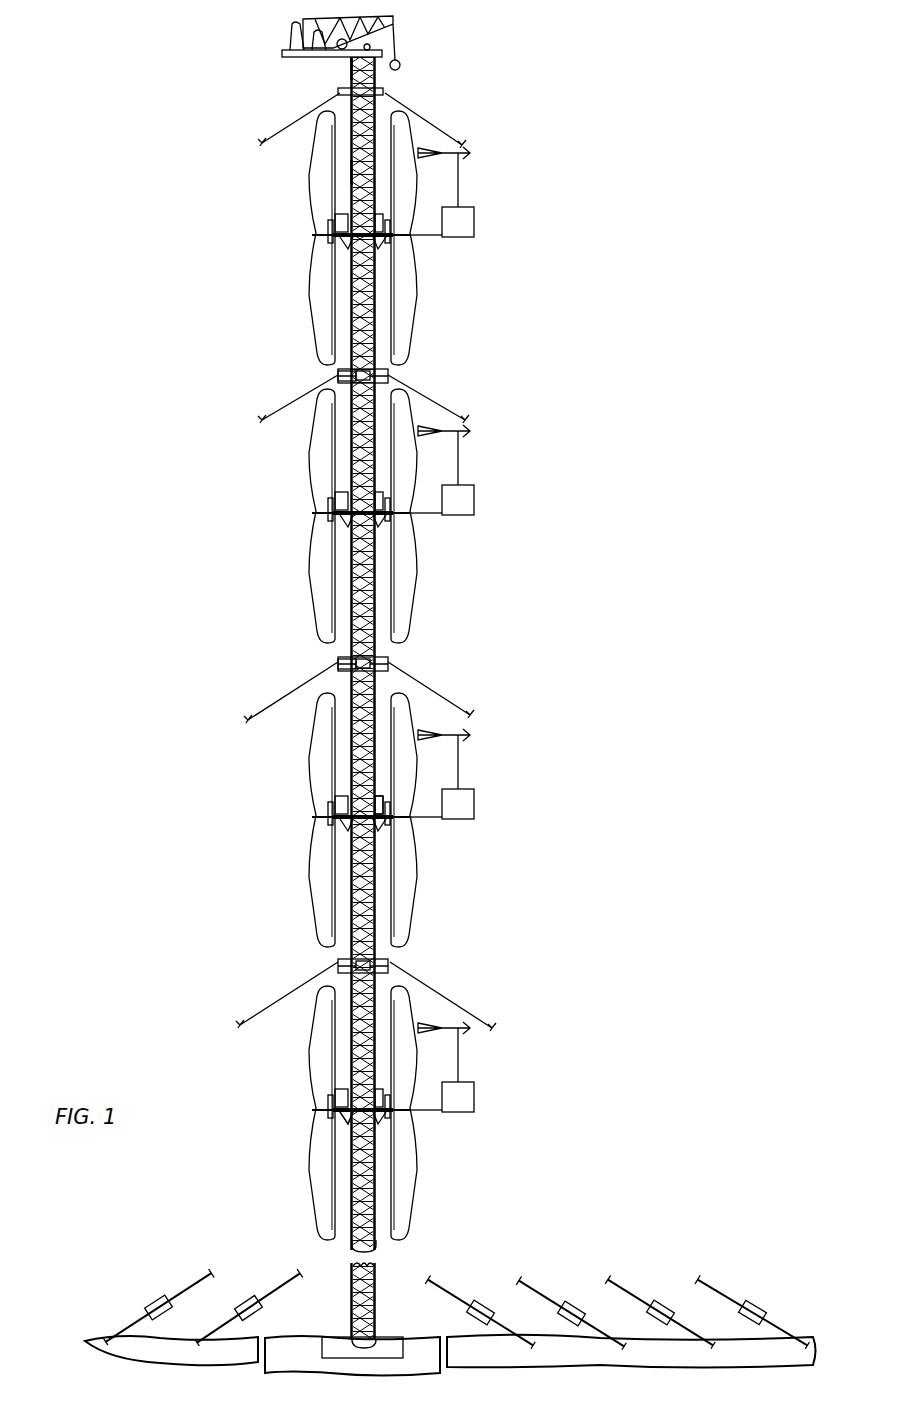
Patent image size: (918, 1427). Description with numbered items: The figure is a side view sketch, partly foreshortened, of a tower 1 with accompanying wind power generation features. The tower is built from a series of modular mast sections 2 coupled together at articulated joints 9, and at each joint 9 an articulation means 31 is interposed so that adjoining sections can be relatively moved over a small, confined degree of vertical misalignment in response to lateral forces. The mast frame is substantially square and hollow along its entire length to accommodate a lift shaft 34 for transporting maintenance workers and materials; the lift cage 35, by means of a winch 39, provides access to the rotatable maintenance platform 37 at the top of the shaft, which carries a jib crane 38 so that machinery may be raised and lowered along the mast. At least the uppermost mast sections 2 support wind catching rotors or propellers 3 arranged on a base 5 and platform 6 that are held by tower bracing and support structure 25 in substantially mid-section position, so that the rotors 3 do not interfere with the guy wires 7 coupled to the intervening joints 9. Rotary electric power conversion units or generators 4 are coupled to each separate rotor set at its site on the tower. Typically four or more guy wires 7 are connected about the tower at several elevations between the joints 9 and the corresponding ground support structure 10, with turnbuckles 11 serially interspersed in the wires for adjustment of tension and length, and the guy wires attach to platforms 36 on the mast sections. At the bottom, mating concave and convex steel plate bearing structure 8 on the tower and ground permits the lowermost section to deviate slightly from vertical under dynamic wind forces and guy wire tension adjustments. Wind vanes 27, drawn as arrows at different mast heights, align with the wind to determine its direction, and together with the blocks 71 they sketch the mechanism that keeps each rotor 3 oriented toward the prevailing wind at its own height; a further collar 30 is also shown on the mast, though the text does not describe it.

The tower 1 is at (556, 384).
The modular mast section 2 is at (376, 323).
The rotor 3 is at (312, 1168).
The generator 4 is at (335, 500).
The base 5 is at (350, 240).
The platform 6 is at (378, 805).
The guy wire 7 is at (460, 140).
The bearing structure 8 is at (380, 1338).
The articulated joint 9 is at (336, 374).
The ground support structure 10 is at (195, 1345).
The turnbuckle 11 is at (150, 1300).
The tower bracing and support structure 25 is at (350, 1118).
The wind vane 27 is at (464, 614).
The lower collar 30 is at (392, 962).
The articulation means 31 is at (390, 373).
The lift shaft 34 is at (376, 172).
The lift cage 35 is at (350, 68).
The platform 36 is at (386, 95).
The rotatable maintenance platform 37 is at (292, 55).
The jib crane 38 is at (335, 18).
The winch 39 is at (396, 46).
The block 71 is at (474, 503).